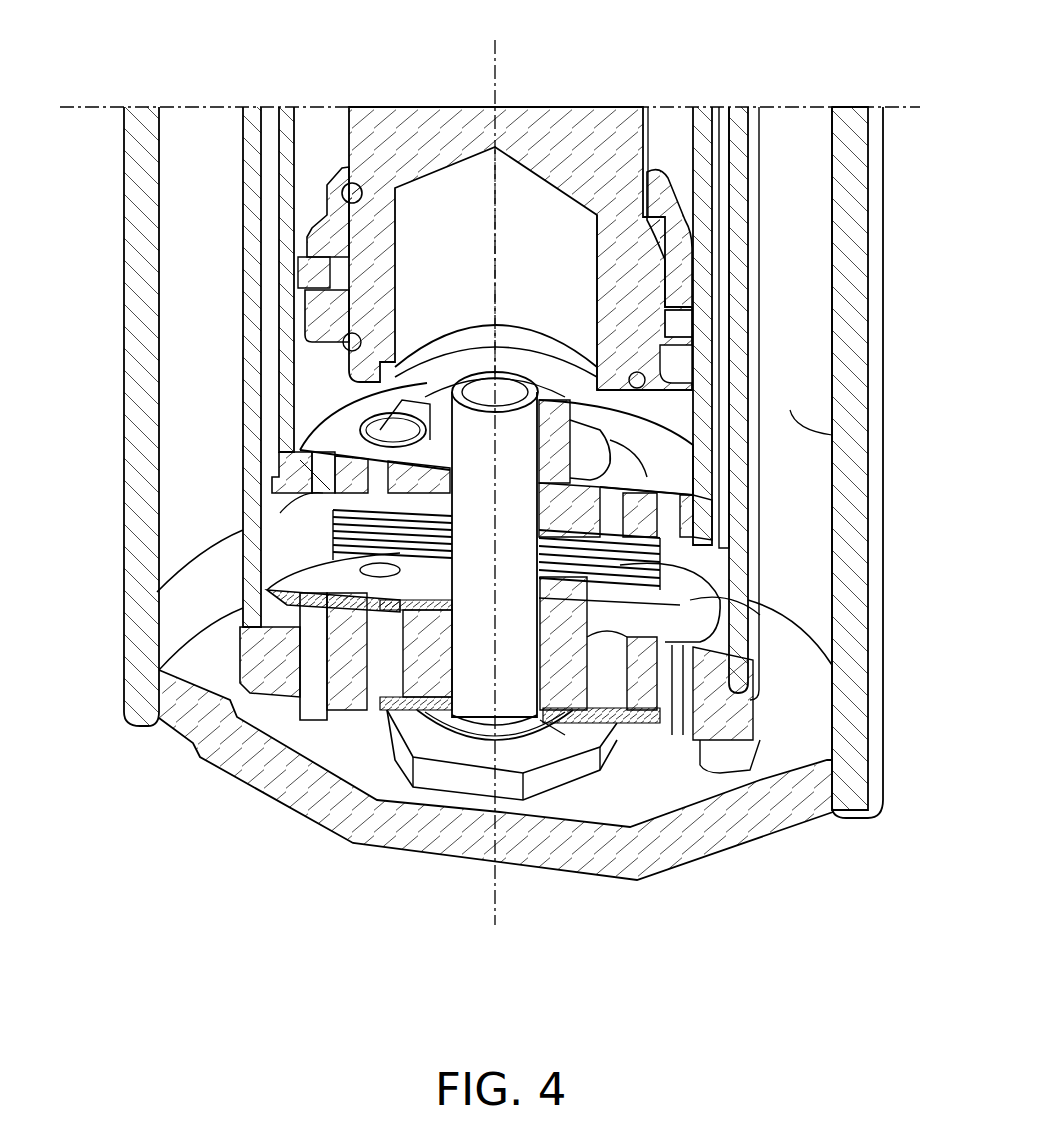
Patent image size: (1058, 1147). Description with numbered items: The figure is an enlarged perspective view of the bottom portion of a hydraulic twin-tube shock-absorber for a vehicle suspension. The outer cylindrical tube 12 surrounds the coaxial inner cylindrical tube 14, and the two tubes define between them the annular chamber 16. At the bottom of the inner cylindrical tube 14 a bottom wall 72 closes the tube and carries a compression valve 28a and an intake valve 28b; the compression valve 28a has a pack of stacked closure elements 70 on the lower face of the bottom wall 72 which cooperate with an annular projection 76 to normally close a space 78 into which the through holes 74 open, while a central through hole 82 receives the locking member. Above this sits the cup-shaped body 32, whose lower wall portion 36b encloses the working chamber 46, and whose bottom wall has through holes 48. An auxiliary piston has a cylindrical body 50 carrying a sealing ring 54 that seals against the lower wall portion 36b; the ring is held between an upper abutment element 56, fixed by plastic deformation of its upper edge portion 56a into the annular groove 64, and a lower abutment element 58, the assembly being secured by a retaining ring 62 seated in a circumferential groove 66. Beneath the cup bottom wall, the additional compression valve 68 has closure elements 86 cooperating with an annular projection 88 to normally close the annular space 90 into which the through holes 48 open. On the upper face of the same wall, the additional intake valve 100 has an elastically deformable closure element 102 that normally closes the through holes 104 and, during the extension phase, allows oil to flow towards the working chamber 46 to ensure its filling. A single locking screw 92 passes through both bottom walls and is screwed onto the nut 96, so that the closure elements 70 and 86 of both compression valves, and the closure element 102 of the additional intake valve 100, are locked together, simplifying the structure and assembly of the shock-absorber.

The outer cylindrical tube 12 is at (848, 340).
The inner cylindrical tube 14 is at (745, 255).
The annular chamber 16 is at (792, 412).
The compression valve 28a is at (565, 730).
The intake valve 28b is at (255, 603).
The cup-shaped body 32 is at (262, 333).
The lower wall portion 36b is at (287, 178).
The working chamber 46 is at (320, 398).
The through holes 48 is at (690, 527).
The cylindrical body 50 is at (622, 140).
The sealing ring 54 is at (700, 325).
The upper abutment element 56 is at (722, 240).
The upper edge portion 56a is at (367, 190).
The lower abutment element 58 is at (648, 383).
The retaining ring 62 is at (345, 345).
The annular groove 64 is at (672, 200).
The circumferential groove 66 is at (665, 447).
The additional compression valve 68 is at (672, 575).
The closure elements 70 is at (380, 708).
The bottom wall 72 is at (385, 700).
The through holes 74 is at (582, 738).
The annular projection 76 is at (612, 715).
The space 78 is at (643, 733).
The through hole 82 is at (470, 660).
The closure elements 86 is at (700, 622).
The annular projection 88 is at (360, 560).
The annular space 90 is at (278, 703).
The locking screw 92 is at (500, 385).
The nut 96 is at (325, 468).
The additional intake valve 100 is at (317, 503).
The closure element 102 is at (578, 300).
The through holes 104 is at (725, 543).